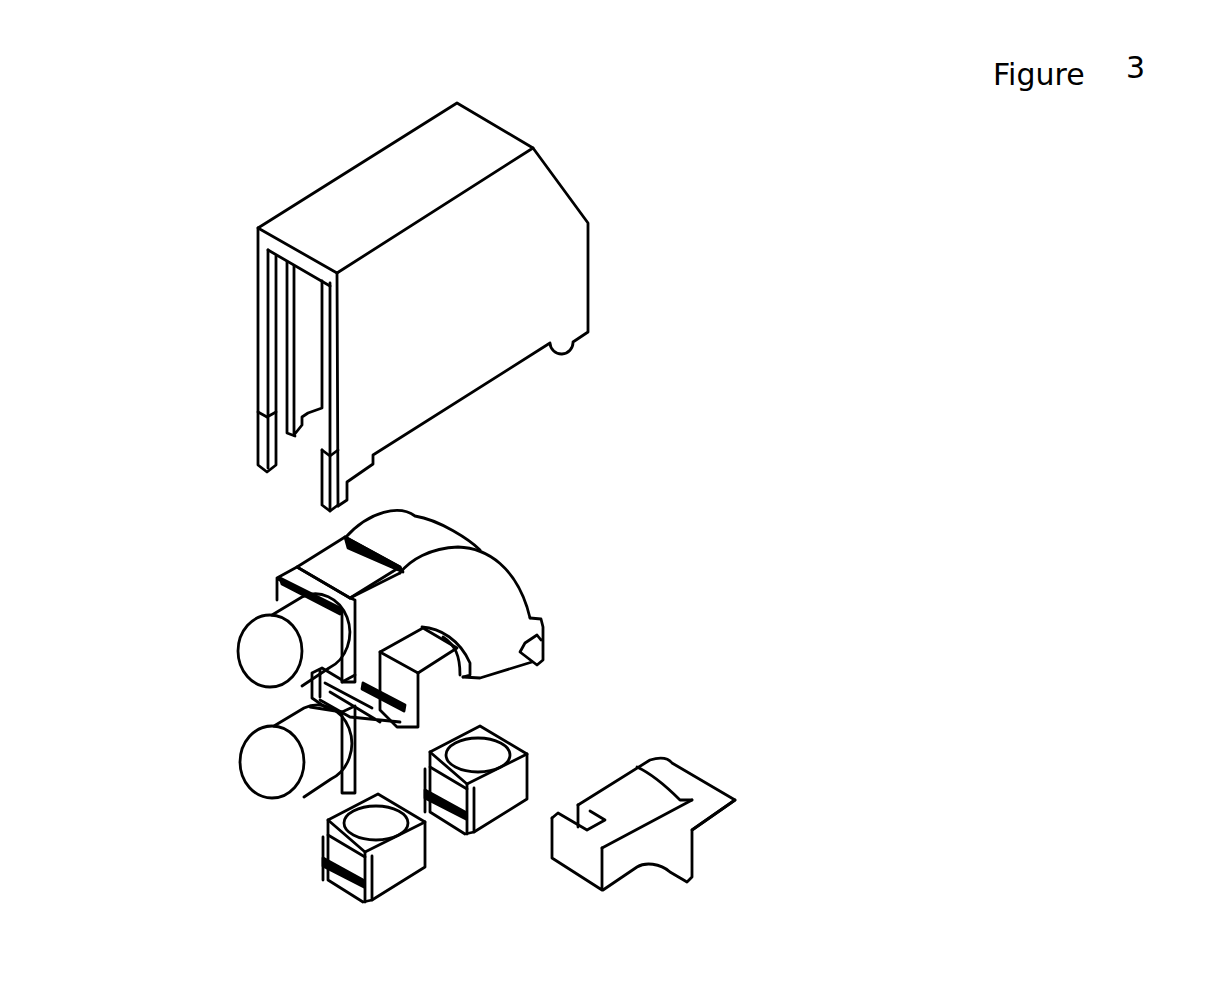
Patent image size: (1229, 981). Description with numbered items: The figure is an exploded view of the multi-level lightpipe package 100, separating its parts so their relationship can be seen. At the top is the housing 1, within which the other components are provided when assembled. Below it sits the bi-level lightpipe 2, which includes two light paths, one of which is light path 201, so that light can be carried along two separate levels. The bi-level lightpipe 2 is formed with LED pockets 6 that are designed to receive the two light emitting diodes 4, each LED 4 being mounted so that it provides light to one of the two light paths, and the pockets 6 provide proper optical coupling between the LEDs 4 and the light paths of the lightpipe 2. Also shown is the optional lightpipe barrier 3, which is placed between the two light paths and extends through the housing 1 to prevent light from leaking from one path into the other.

The multi-level lightpipe package 100 is at (232, 142).
The housing 1 is at (575, 278).
The bi-level lightpipe 2 is at (591, 626).
The light path 201 is at (483, 590).
The lightpipe barrier 3 is at (728, 816).
The light emitting diode 4 is at (420, 872).
The LED pocket 6 is at (390, 737).